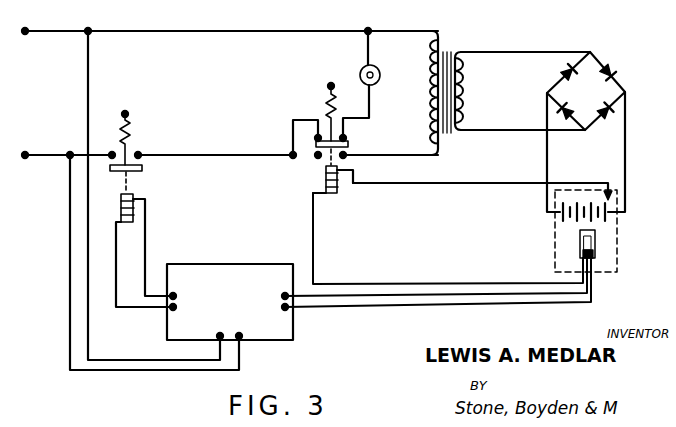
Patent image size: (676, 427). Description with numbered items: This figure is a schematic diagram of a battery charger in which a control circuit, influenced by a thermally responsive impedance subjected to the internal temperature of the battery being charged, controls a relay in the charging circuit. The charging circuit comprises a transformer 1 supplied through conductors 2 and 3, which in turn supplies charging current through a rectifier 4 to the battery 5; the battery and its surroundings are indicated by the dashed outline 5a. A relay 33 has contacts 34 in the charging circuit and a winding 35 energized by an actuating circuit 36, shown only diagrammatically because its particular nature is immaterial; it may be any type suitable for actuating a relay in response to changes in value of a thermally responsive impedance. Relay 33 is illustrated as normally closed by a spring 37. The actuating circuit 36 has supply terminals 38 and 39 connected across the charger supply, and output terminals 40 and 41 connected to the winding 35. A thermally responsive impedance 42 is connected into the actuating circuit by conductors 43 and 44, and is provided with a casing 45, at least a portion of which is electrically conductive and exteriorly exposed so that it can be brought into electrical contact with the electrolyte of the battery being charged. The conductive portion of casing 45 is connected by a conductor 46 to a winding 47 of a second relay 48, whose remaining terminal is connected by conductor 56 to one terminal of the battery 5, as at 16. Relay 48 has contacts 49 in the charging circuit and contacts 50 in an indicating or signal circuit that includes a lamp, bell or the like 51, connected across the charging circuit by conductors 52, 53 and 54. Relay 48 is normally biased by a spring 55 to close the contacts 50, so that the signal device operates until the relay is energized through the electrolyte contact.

The transformer 1 is at (449, 48).
The conductor 2 is at (258, 31).
The conductor 3 is at (195, 155).
The rectifier 4 is at (586, 91).
The battery 5 is at (600, 216).
The battery housing 5a is at (617, 233).
The battery terminal connection 16 is at (613, 197).
The relay 33 is at (137, 181).
The contacts 34 is at (143, 153).
The winding 35 is at (122, 208).
The actuating circuit 36 is at (238, 264).
The spring 37 is at (131, 130).
The supply terminal 38 is at (220, 339).
The supply terminal 39 is at (240, 339).
The output terminal 40 is at (170, 297).
The output terminal 41 is at (170, 308).
The thermally responsive impedance 42 is at (598, 250).
The conductor 43 is at (408, 300).
The conductor 44 is at (455, 296).
The casing 45 is at (595, 258).
The conductor 46 is at (505, 284).
The winding 47 is at (324, 176).
The relay 48 is at (342, 163).
The contacts 49 is at (348, 152).
The contacts 50 is at (315, 140).
The lamp 51 is at (380, 78).
The conductor 52 is at (300, 120).
The conductor 53 is at (369, 108).
The conductor 54 is at (368, 55).
The spring 55 is at (328, 100).
The conductor 56 is at (455, 184).